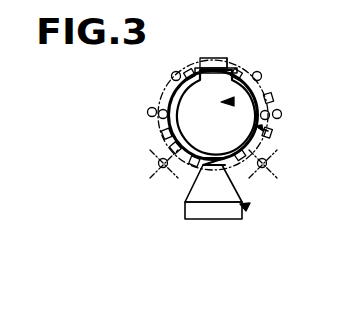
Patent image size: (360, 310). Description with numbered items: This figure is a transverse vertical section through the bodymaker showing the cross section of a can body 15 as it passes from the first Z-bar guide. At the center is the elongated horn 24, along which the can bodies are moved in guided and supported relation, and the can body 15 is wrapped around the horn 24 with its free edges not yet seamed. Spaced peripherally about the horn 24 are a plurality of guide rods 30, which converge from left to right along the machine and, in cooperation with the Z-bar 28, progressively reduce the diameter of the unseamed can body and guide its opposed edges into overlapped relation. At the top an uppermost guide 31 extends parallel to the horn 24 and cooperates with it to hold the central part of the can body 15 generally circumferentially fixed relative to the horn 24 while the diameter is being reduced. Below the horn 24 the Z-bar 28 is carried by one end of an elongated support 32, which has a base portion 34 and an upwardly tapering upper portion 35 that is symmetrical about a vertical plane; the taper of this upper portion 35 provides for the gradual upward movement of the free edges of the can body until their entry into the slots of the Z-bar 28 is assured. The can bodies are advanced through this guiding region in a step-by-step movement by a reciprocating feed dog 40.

The can body 15 is at (268, 131).
The horn 24 is at (233, 101).
The Z-bar 28 is at (238, 171).
The guide rods 30 is at (148, 112).
The uppermost guide 31 is at (233, 63).
The elongated support 32 is at (247, 207).
The base portion 34 is at (215, 208).
The upper portion 35 is at (187, 190).
The feed dog 40 is at (193, 70).